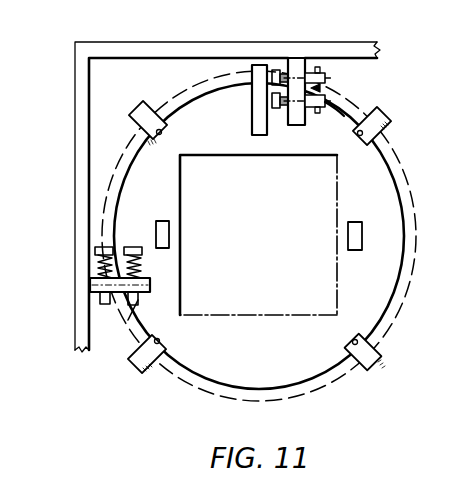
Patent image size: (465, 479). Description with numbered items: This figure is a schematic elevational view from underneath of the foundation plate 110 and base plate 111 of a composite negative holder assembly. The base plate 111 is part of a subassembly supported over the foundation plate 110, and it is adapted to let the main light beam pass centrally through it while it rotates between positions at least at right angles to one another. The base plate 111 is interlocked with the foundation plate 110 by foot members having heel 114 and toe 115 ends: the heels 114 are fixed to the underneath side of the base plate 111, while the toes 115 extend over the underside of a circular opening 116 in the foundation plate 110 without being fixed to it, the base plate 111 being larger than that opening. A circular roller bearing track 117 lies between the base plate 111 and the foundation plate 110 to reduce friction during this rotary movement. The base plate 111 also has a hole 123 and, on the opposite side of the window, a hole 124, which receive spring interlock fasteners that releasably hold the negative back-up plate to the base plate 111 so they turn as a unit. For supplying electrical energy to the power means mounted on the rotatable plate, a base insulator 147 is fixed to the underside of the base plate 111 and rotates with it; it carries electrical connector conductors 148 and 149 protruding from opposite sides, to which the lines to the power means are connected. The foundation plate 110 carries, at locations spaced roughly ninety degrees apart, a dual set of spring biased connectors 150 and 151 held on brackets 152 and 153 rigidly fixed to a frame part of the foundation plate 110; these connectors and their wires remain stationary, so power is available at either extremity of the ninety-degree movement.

The foundation plate 110 is at (108, 67).
The base plate 111 is at (162, 187).
The heel 114 is at (161, 132).
The toe 115 is at (143, 103).
The circular opening 116 is at (346, 112).
The circular roller bearing track 117 is at (190, 387).
The hole 123 is at (367, 238).
The hole 124 is at (156, 232).
The base insulator 147 is at (252, 88).
The electrical connector conductor 148 is at (252, 76).
The electrical connector conductor 149 is at (277, 109).
The spring biased connector 150 is at (320, 72).
The spring biased connector 151 is at (332, 114).
The bracket 152 is at (91, 284).
The bracket 153 is at (297, 63).